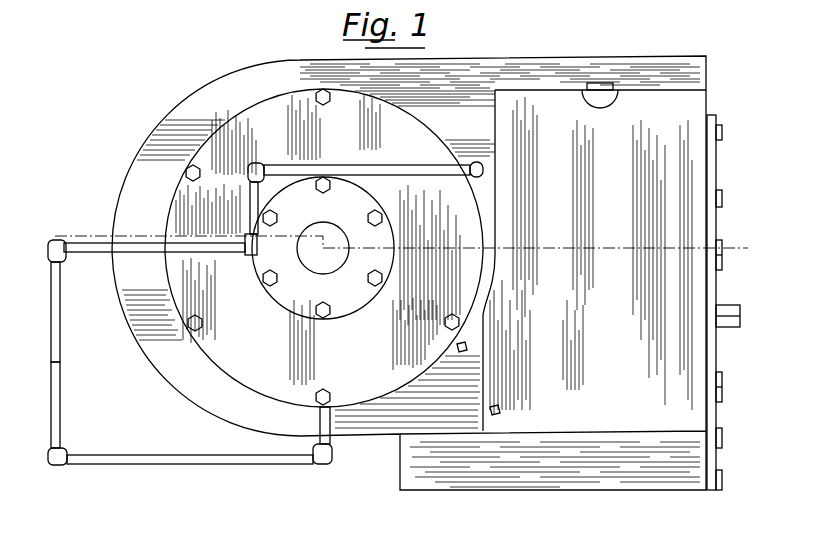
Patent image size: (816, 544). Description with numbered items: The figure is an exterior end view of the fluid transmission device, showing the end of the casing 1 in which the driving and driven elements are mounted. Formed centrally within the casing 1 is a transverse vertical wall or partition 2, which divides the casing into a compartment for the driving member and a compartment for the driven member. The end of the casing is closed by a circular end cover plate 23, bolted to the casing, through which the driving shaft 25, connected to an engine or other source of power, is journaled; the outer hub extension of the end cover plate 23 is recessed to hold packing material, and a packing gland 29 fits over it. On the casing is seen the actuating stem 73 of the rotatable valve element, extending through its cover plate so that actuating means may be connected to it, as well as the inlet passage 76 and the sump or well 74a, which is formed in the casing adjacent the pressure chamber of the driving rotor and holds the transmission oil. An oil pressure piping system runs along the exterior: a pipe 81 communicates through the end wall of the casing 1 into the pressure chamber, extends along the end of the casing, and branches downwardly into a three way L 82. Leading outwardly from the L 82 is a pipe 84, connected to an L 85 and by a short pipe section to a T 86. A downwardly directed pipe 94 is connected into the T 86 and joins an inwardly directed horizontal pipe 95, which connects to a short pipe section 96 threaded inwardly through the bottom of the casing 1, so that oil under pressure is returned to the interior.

The casing 1 is at (478, 88).
The transverse vertical wall or partition 2 is at (90, 242).
The end cover plate 23 is at (324, 248).
The driving shaft 25 is at (314, 254).
The packing gland 29 is at (323, 248).
The actuating stem 73 is at (735, 318).
The sump or well 74a is at (581, 260).
The inlet passage 76 is at (614, 84).
The pipe 81 is at (411, 172).
The three way L 82 is at (249, 255).
The pipe 84 is at (140, 247).
The L 85 is at (62, 254).
The T 86 is at (62, 258).
The downwardly directed pipe 94 is at (60, 424).
The inwardly directed horizontal pipe 95 is at (150, 456).
The short pipe section 96 is at (331, 448).